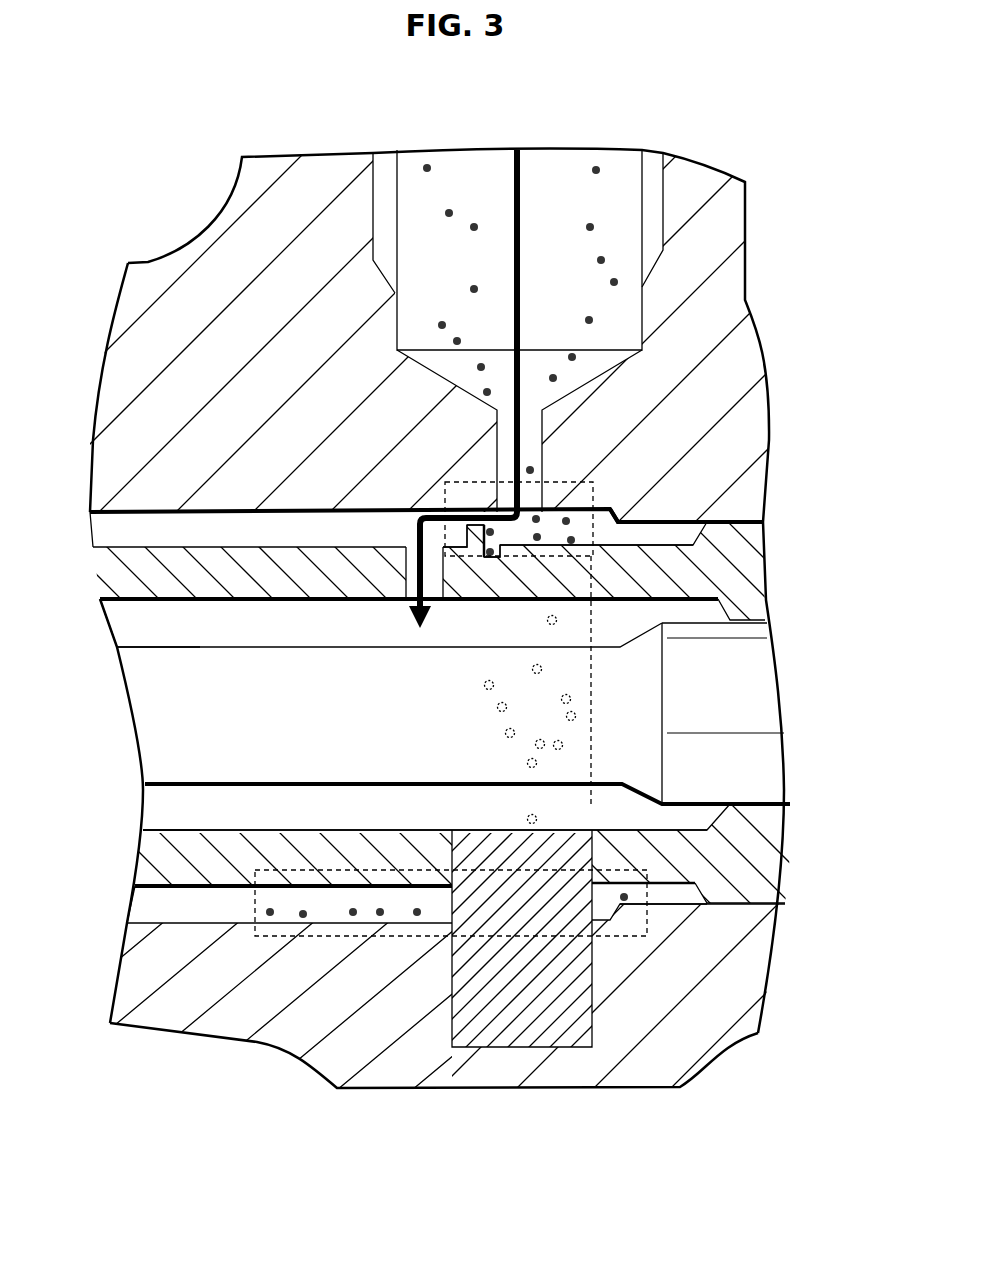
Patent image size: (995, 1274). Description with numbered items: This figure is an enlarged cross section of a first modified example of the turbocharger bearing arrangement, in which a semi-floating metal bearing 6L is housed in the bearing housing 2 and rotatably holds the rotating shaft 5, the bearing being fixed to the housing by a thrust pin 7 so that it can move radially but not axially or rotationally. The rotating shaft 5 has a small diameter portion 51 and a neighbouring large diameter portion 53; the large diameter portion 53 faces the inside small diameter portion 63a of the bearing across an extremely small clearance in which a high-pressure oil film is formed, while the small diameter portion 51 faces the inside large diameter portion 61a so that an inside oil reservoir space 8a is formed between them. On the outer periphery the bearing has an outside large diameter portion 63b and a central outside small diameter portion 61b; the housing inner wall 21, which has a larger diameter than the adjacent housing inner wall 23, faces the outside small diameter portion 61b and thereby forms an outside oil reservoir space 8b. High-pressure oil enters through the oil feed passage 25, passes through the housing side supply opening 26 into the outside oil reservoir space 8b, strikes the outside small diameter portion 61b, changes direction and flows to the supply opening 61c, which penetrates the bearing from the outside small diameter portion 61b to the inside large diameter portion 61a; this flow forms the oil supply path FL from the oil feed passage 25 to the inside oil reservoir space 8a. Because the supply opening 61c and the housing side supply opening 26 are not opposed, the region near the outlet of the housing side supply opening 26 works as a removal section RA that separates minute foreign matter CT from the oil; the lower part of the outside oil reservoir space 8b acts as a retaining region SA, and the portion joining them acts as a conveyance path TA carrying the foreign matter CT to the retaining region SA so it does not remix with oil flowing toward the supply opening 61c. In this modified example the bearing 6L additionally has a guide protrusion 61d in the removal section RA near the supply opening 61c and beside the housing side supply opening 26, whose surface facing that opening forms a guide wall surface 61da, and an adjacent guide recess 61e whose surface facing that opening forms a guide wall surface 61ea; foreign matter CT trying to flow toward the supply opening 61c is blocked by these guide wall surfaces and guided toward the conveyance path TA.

The bearing housing 2 is at (738, 273).
The oil feed passage 25 is at (554, 182).
The housing side supply opening 26 is at (538, 438).
The housing inner wall 21 is at (292, 516).
The housing inner wall 23 is at (665, 523).
The outside oil reservoir space 8b is at (128, 535).
The inside oil reservoir space 8a is at (130, 625).
The inside large diameter portion 61a is at (183, 602).
The outside small diameter portion 61b is at (156, 547).
The supply opening 61c is at (408, 553).
The guide protrusion 61d is at (474, 514).
The guide wall surface 61da is at (493, 530).
The guide recess 61e is at (497, 560).
The guide wall surface 61ea is at (488, 560).
The inside small diameter portion 63a is at (755, 624).
The outside large diameter portion 63b is at (735, 515).
The semi-floating metal bearing 6L is at (170, 870).
The rotating shaft 5 is at (152, 719).
The small diameter portion 51 is at (180, 766).
The large diameter portion 53 is at (770, 718).
The thrust pin 7 is at (541, 1035).
The oil supply path FL is at (512, 188).
The minute foreign matter CT is at (598, 168).
The removal section RA is at (598, 496).
The conveyance path TA is at (592, 748).
The retaining region SA is at (647, 936).